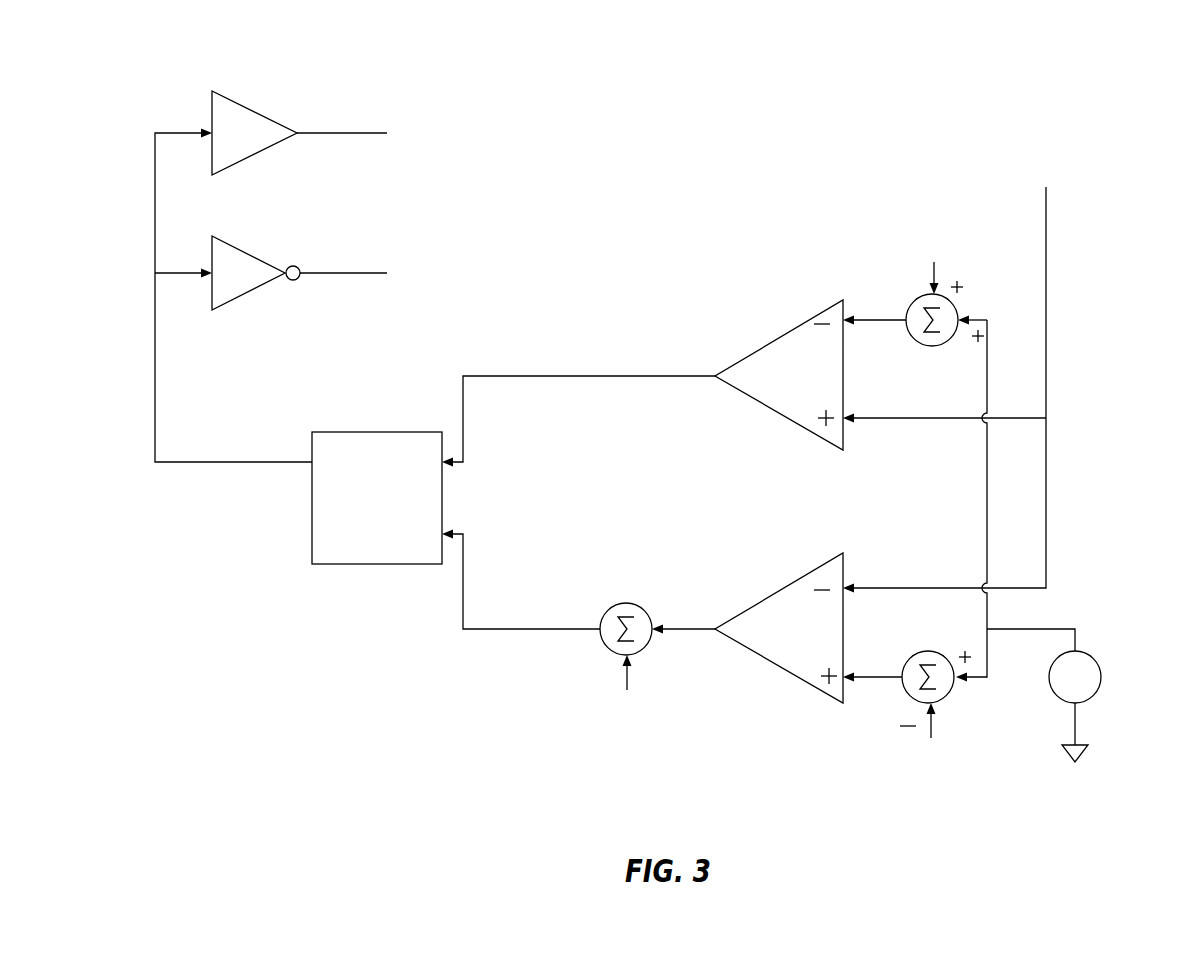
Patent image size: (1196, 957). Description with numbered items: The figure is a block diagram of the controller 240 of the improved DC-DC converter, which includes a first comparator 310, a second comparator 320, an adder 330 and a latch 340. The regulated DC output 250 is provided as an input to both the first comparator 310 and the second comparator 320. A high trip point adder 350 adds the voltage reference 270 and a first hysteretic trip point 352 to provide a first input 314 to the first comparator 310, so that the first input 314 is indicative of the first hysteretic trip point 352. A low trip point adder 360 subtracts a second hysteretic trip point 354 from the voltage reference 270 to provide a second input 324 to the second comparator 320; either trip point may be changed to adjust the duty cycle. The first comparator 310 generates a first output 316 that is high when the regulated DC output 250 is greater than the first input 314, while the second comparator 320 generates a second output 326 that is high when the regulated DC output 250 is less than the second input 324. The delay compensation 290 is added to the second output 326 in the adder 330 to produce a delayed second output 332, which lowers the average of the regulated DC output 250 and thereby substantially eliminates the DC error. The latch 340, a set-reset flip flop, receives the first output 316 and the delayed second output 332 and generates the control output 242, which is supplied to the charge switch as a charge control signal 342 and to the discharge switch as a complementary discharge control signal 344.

The controller 240 is at (1034, 111).
The control output 242 is at (228, 463).
The regulated DC output 250 is at (1046, 230).
The voltage reference 270 is at (1093, 659).
The delay compensation 290 is at (631, 708).
The first comparator 310 is at (763, 348).
The first input 314 is at (870, 318).
The first output 316 is at (583, 376).
The second comparator 320 is at (752, 606).
The second input 324 is at (890, 679).
The second output 326 is at (688, 632).
The adder 330 is at (608, 650).
The delayed second output 332 is at (497, 630).
The latch 340 is at (363, 516).
The charge control signal 342 is at (370, 132).
The discharge control signal 344 is at (368, 274).
The high trip point adder 350 is at (926, 296).
The first hysteretic trip point 352 is at (937, 232).
The second hysteretic trip point 354 is at (937, 772).
The low trip point adder 360 is at (948, 694).